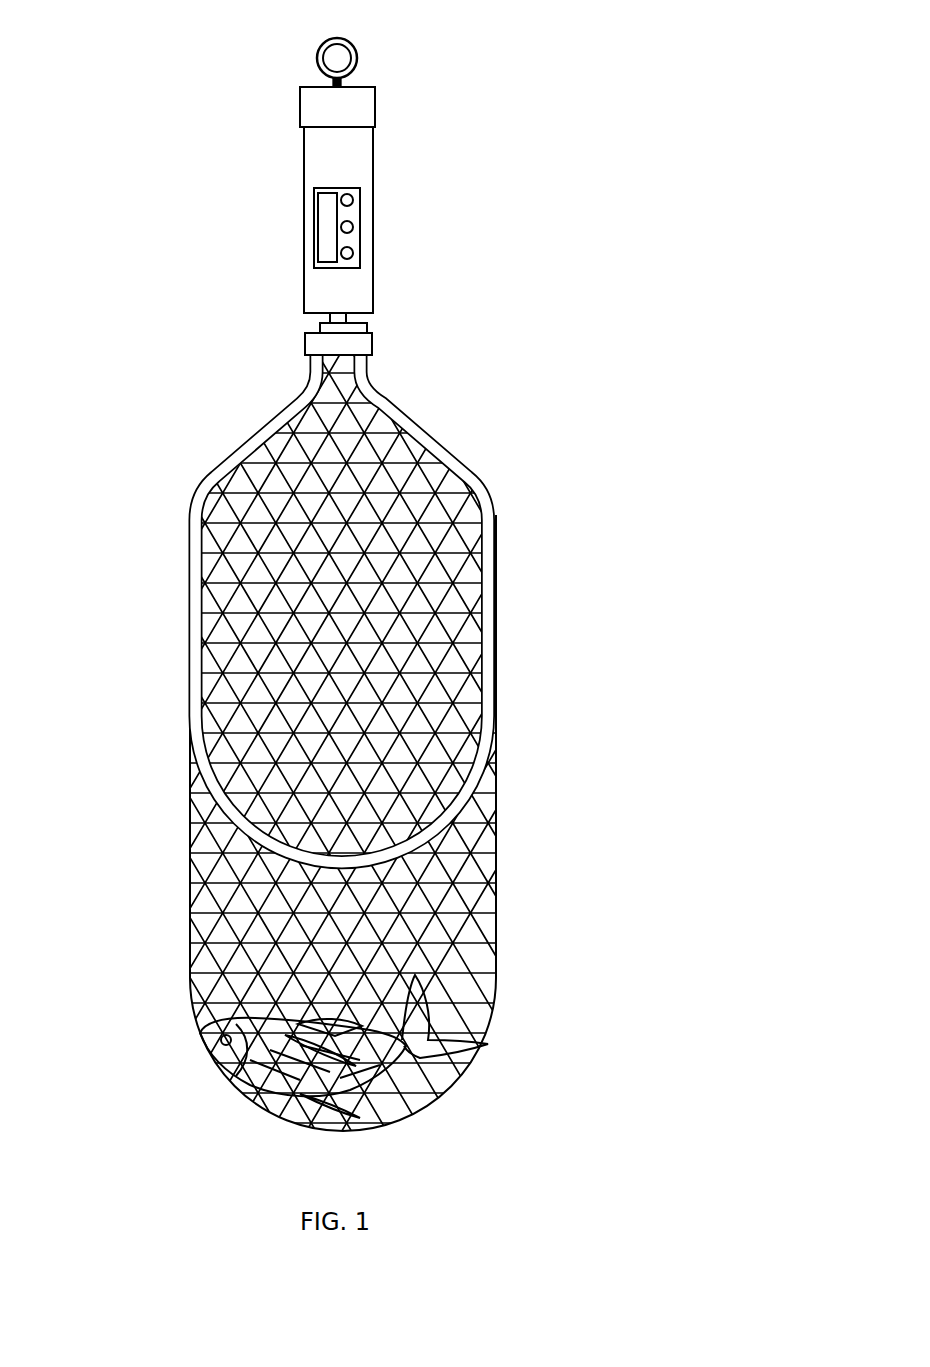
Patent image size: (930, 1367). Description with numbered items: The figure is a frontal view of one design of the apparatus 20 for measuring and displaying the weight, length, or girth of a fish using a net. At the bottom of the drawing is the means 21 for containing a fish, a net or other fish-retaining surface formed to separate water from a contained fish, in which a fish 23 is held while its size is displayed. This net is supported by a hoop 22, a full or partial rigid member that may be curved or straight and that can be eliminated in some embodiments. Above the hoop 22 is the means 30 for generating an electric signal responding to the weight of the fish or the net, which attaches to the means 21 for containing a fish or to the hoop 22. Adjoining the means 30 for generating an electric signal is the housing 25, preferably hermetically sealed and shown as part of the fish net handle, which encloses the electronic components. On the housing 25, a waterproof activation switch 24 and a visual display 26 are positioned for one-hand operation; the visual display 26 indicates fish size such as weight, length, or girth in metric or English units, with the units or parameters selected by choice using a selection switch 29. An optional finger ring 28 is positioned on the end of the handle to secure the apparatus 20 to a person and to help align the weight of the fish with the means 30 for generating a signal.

The apparatus 20 is at (485, 457).
The means for containing a fish 21 is at (496, 845).
The hoop 22 is at (497, 620).
The fish 23 is at (413, 1057).
The activation switch 24 is at (353, 225).
The housing 25 is at (320, 138).
The visual display 26 is at (330, 232).
The finger ring 28 is at (330, 48).
The selection switch 29 is at (352, 253).
The means for generating an electric signal 30 is at (317, 327).